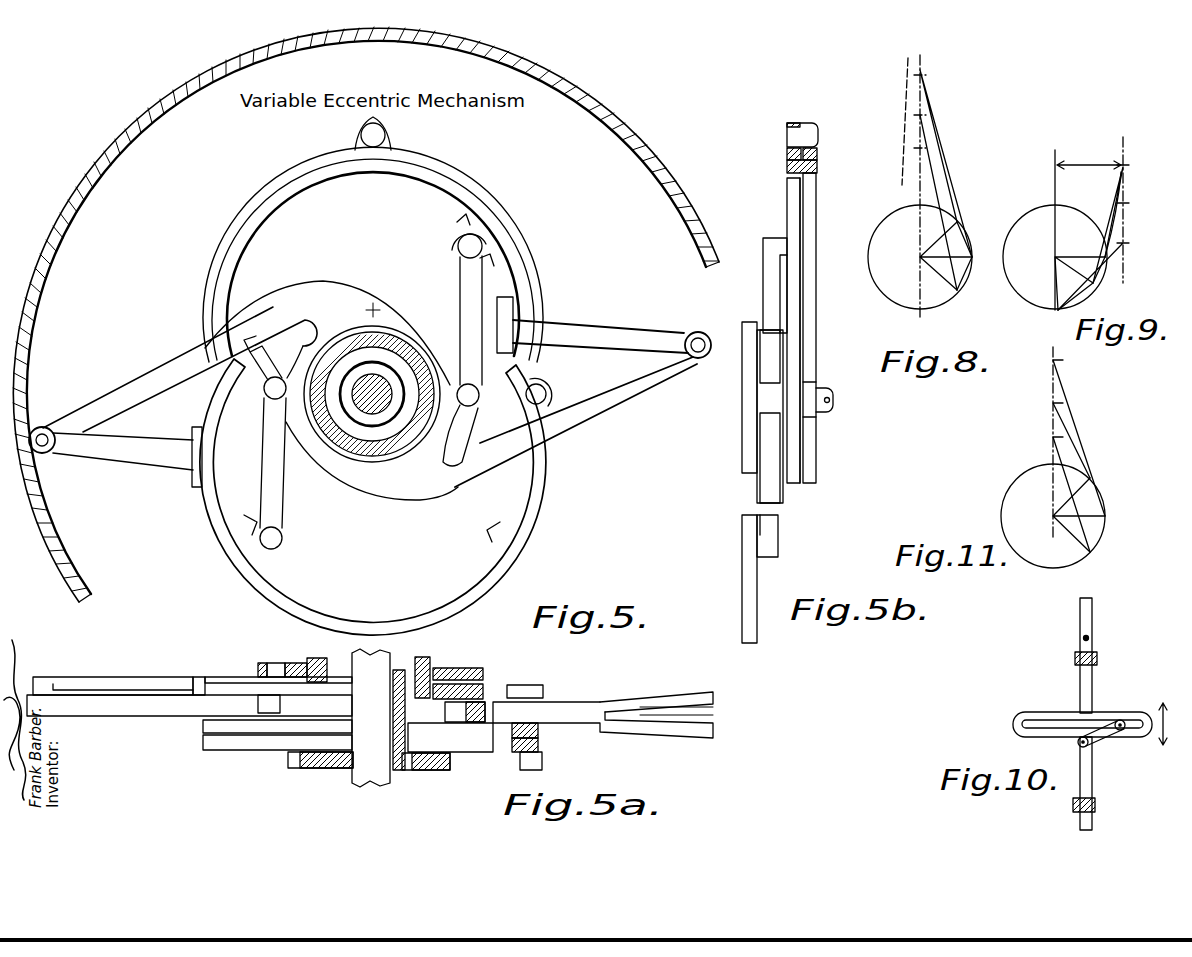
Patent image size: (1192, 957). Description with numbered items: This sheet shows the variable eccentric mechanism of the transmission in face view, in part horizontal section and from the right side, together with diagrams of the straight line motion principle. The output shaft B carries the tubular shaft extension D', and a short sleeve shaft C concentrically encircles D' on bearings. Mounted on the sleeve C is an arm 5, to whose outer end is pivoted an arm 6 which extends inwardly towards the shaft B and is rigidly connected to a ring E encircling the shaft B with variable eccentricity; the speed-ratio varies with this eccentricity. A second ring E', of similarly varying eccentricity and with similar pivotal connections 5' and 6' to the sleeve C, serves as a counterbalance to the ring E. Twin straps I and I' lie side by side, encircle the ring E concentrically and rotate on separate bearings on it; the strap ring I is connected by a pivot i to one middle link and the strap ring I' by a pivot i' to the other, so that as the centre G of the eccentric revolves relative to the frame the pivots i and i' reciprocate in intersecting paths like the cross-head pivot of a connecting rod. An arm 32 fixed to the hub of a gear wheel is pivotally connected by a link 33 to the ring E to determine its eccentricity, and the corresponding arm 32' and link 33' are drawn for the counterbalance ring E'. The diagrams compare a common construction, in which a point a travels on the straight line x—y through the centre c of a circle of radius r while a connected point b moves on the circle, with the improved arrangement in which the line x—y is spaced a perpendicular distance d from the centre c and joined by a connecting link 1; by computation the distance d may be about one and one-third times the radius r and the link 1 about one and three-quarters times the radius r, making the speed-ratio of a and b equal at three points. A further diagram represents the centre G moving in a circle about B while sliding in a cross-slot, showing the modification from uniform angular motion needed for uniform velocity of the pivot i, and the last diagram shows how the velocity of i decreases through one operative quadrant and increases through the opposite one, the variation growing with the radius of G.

In FIG. 5, the pivot i is at (380, 133).
In FIG. 5B, the pivot i is at (790, 136).
In FIG. 11, the pivot i is at (1070, 451).
In FIG. 10, the pivot i is at (1093, 714).
In FIG. 5, the pivot i' is at (546, 385).
In FIG. 5A, the pivot i' is at (517, 764).
In FIG. 5B, the pivot i' is at (837, 400).
In FIG. 5, the eccentric ring E is at (383, 254).
In FIG. 5A, the eccentric ring E is at (459, 737).
In FIG. 5B, the eccentric ring E is at (774, 187).
In FIG. 5, the counterbalance ring E' is at (388, 497).
In FIG. 5A, the counterbalance ring E' is at (272, 673).
In FIG. 5B, the counterbalance ring E' is at (762, 583).
In FIG. 5, the strap ring I is at (385, 259).
In FIG. 5A, the strap ring I is at (372, 737).
In FIG. 5B, the strap ring I is at (787, 315).
In FIG. 5A, the strap ring I' is at (376, 756).
In FIG. 5B, the strap ring I' is at (820, 315).
In FIG. 5, the link 33 is at (454, 309).
In FIG. 5B, the link 33 is at (760, 285).
In FIG. 5, the link 33' is at (293, 473).
In FIG. 5B, the link 33' is at (787, 536).
In FIG. 5, the arm 32 is at (468, 455).
In FIG. 5, the arm 32' is at (256, 400).
In FIG. 5, the centre of eccentric G is at (366, 322).
In FIG. 11, the centre of eccentric G is at (1089, 519).
In FIG. 10, the centre of eccentric G is at (1090, 718).
In FIG. 5, the sleeve shaft C is at (380, 352).
In FIG. 5, the output shaft B is at (382, 380).
In FIG. 5A, the output shaft B is at (362, 770).
In FIG. 11, the output shaft B is at (1053, 457).
In FIG. 10, the output shaft B is at (1090, 746).
In FIG. 5, the tubular shaft extension D' is at (372, 427).
In FIG. 5, the arm 5 is at (583, 409).
In FIG. 5A, the arm 5 is at (573, 695).
In FIG. 5B, the arm 5 is at (748, 412).
In FIG. 5, the arm 5' is at (173, 380).
In FIG. 5A, the arm 5' is at (189, 721).
In FIG. 5, the arm 6 is at (600, 326).
In FIG. 5A, the arm 6 is at (603, 733).
In FIG. 5, the arm 6' is at (127, 460).
In FIG. 5A, the arm 6' is at (113, 673).
In FIG. 8, the straight line end point x is at (918, 177).
In FIG. 9, the straight line end point x is at (1121, 199).
In FIG. 8, the straight line end point y is at (917, 331).
In FIG. 9, the straight line end point y is at (1119, 289).
In FIG. 8, the point a is at (932, 174).
In FIG. 9, the point a is at (1106, 232).
In FIG. 8, the point b is at (973, 257).
In FIG. 9, the point b is at (1081, 282).
In FIG. 8, the centre c is at (920, 257).
In FIG. 9, the centre c is at (1055, 230).
In FIG. 8, the radius r is at (946, 261).
In FIG. 9, the radius r is at (1071, 283).
In FIG. 9, the perpendicular distance d is at (1089, 157).
In FIG. 9, the connecting link 1 is at (1120, 192).